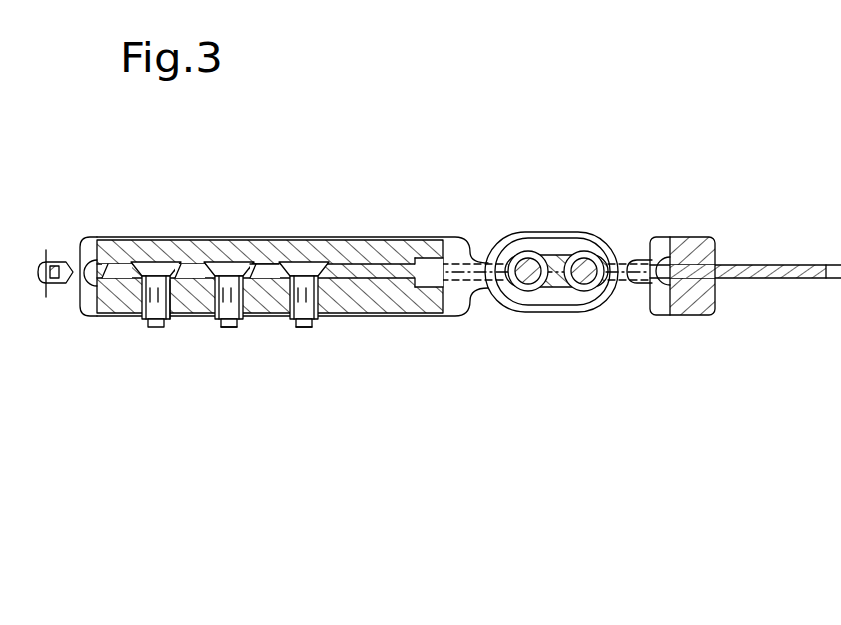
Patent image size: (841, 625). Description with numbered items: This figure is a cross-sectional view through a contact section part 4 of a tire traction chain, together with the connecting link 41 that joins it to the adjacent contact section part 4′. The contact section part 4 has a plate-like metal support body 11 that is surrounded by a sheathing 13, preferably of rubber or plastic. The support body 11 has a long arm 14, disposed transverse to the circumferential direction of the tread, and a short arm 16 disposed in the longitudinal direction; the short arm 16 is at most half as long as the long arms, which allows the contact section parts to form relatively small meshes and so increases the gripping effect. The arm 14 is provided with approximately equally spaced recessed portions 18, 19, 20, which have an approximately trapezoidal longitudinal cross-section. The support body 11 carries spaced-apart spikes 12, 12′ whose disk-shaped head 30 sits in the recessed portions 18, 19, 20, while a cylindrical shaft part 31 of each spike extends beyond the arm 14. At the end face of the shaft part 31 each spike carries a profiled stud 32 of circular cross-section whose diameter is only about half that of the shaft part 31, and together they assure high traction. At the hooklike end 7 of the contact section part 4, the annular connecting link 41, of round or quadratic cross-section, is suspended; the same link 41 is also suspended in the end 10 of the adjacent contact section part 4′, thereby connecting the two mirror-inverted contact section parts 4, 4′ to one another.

The contact section part 4 is at (394, 230).
The contact section part 4′ is at (700, 225).
The hooklike end 7 is at (529, 292).
The hooklike end 10 is at (587, 292).
The support body 11 is at (437, 262).
The spike 12 is at (144, 322).
The spike 12′ is at (216, 322).
The sheathing 13 is at (373, 306).
The arm 14 is at (183, 318).
The arm 16 is at (417, 283).
The recessed portion 18 is at (168, 238).
The recessed portion 19 is at (240, 238).
The recessed portion 20 is at (330, 238).
The disk-shaped head 30 is at (272, 238).
The shaft part 31 is at (246, 327).
The profiled stud 32 is at (311, 326).
The connecting link 41 is at (575, 235).